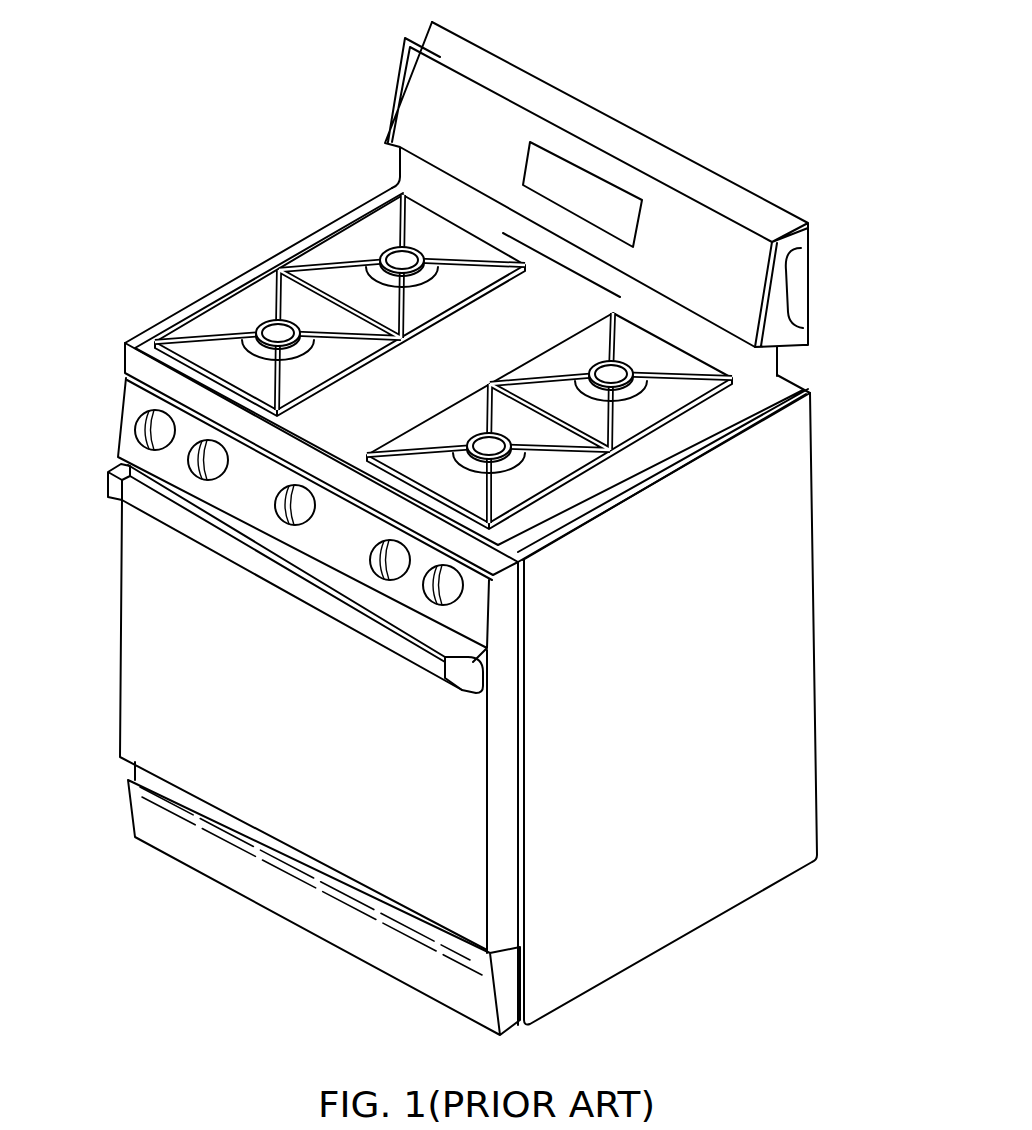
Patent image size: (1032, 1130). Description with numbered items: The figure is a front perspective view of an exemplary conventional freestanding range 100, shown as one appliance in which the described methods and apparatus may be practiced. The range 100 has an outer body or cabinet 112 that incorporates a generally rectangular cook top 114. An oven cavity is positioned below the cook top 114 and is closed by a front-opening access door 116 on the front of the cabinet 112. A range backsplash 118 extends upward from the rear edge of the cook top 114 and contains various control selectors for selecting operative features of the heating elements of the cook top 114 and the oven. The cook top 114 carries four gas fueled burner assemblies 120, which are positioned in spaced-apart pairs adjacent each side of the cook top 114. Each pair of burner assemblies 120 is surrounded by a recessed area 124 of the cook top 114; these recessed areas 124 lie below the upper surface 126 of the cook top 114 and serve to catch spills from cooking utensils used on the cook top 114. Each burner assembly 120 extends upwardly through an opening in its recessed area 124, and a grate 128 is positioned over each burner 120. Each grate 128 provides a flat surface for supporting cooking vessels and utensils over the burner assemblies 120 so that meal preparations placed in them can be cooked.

The freestanding range 100 is at (786, 52).
The cabinet 112 is at (787, 664).
The cook top 114 is at (552, 312).
The access door 116 is at (130, 642).
The range backsplash 118 is at (485, 102).
The gas fueled burner assembly 120 is at (378, 252).
The recessed area 124 is at (235, 303).
The upper surface 126 is at (300, 422).
The grate 128 is at (477, 230).